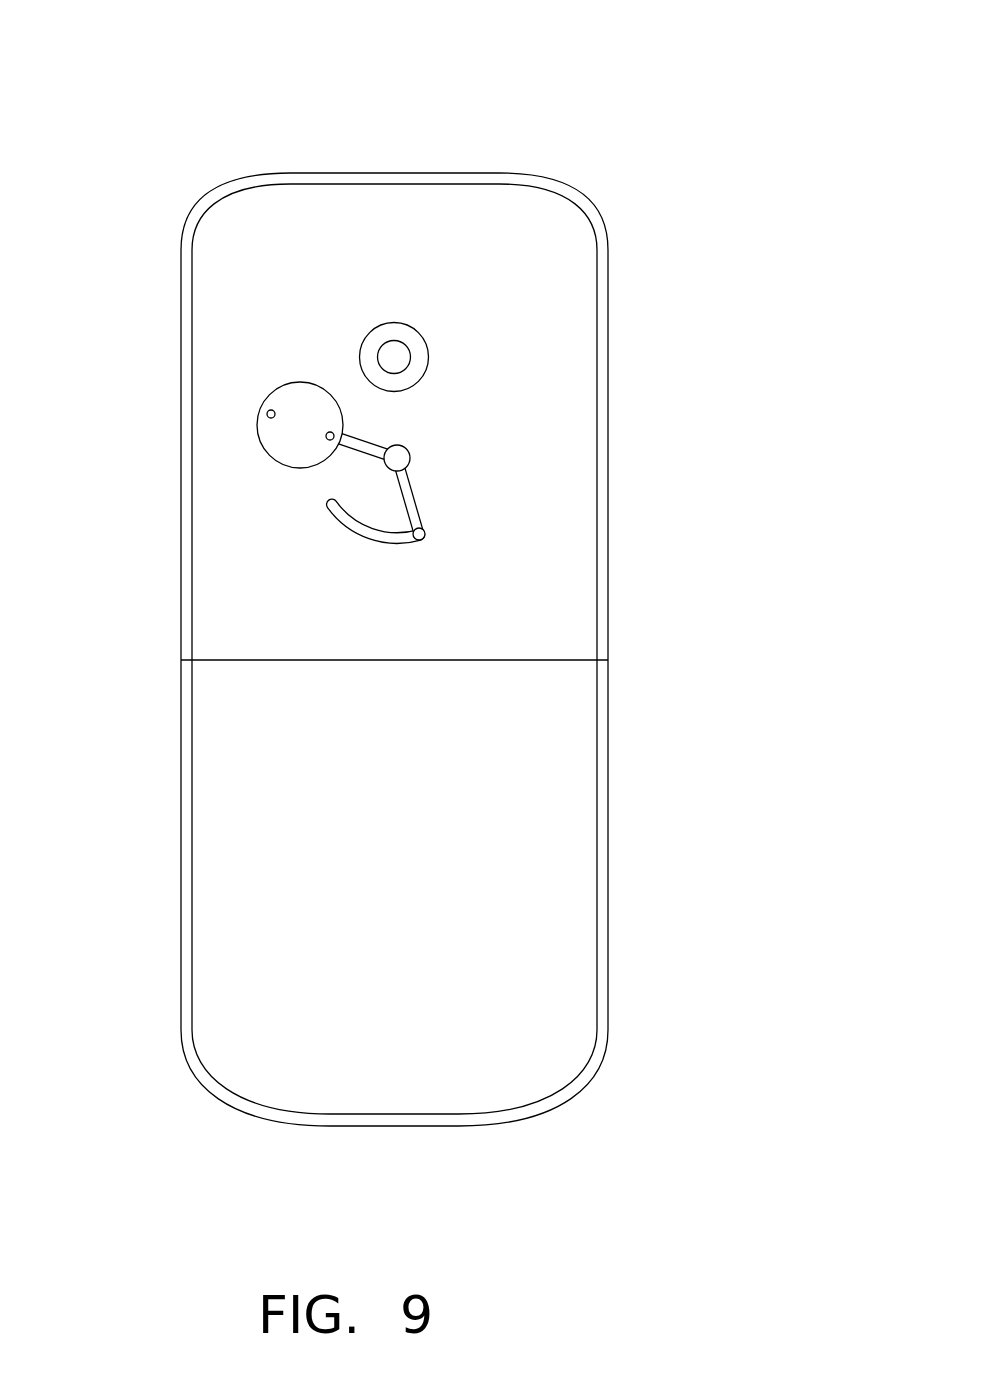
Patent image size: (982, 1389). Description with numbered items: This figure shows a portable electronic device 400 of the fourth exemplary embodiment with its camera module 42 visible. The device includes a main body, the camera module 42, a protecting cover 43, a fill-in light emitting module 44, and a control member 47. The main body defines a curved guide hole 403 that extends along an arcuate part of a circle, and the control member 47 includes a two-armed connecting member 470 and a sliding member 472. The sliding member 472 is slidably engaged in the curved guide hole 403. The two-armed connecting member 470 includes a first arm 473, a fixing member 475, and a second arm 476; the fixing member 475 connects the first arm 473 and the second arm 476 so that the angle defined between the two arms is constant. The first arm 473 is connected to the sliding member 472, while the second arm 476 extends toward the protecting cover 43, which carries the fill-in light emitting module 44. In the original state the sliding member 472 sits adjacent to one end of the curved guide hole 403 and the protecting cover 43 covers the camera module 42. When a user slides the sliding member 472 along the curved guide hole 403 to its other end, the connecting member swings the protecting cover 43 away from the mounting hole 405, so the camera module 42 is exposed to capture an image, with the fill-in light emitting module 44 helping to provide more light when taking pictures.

The portable electronic device 400 is at (455, 76).
The camera module 42 is at (394, 352).
The mounting hole 405 is at (418, 350).
The protecting cover 43 is at (277, 390).
The fill-in light emitting module 44 is at (266, 414).
The curved guide hole 403 is at (333, 511).
The control member 47 is at (597, 437).
The two-armed connecting member 470 is at (564, 433).
The second arm 476 is at (360, 446).
The fixing member 475 is at (398, 457).
The first arm 473 is at (410, 502).
The sliding member 472 is at (422, 533).